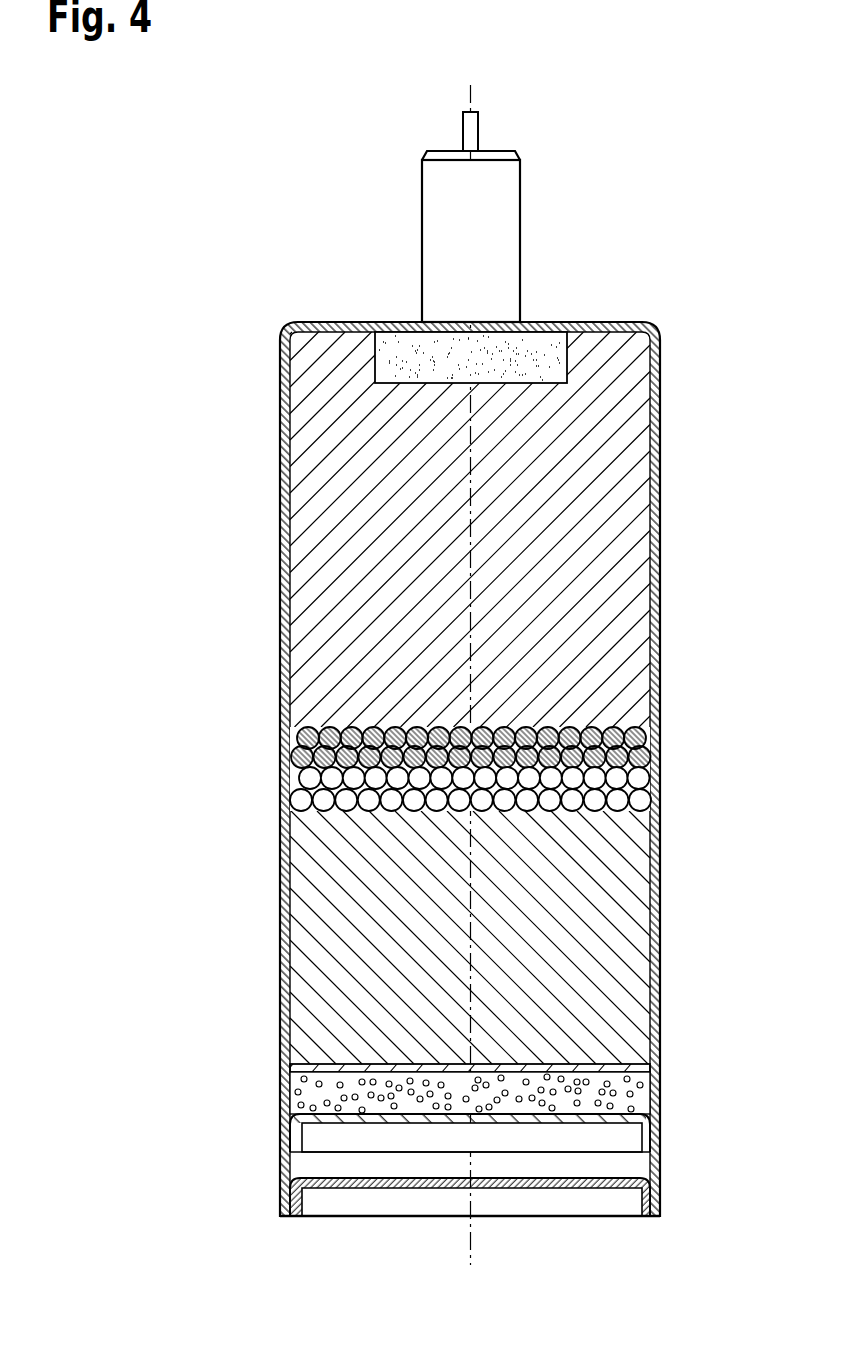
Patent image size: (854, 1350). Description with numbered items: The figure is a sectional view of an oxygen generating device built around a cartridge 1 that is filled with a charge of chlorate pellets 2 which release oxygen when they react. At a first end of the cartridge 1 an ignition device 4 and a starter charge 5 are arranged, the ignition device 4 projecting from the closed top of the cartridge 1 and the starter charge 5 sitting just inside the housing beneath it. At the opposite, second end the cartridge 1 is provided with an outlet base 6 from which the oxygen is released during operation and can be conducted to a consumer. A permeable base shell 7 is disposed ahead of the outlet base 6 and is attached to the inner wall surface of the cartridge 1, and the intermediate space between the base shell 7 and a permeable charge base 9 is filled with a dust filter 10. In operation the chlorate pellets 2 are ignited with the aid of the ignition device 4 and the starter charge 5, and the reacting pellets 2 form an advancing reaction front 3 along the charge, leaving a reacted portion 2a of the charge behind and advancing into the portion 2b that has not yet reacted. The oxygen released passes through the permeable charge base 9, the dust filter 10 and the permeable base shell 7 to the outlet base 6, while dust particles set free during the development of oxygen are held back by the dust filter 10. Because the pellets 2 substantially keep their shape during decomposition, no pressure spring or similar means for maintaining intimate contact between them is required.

The cartridge 1 is at (655, 568).
The chlorate pellets 2 is at (484, 772).
The reacted portion of the charge 2a is at (335, 652).
The unreacted portion of the charge 2b is at (340, 886).
The reaction front 3 is at (318, 776).
The ignition device 4 is at (502, 197).
The starter charge 5 is at (548, 348).
The outlet base 6 is at (622, 1182).
The permeable base shell 7 is at (604, 1118).
The charge base 9 is at (622, 1068).
The dust filter 10 is at (630, 1098).